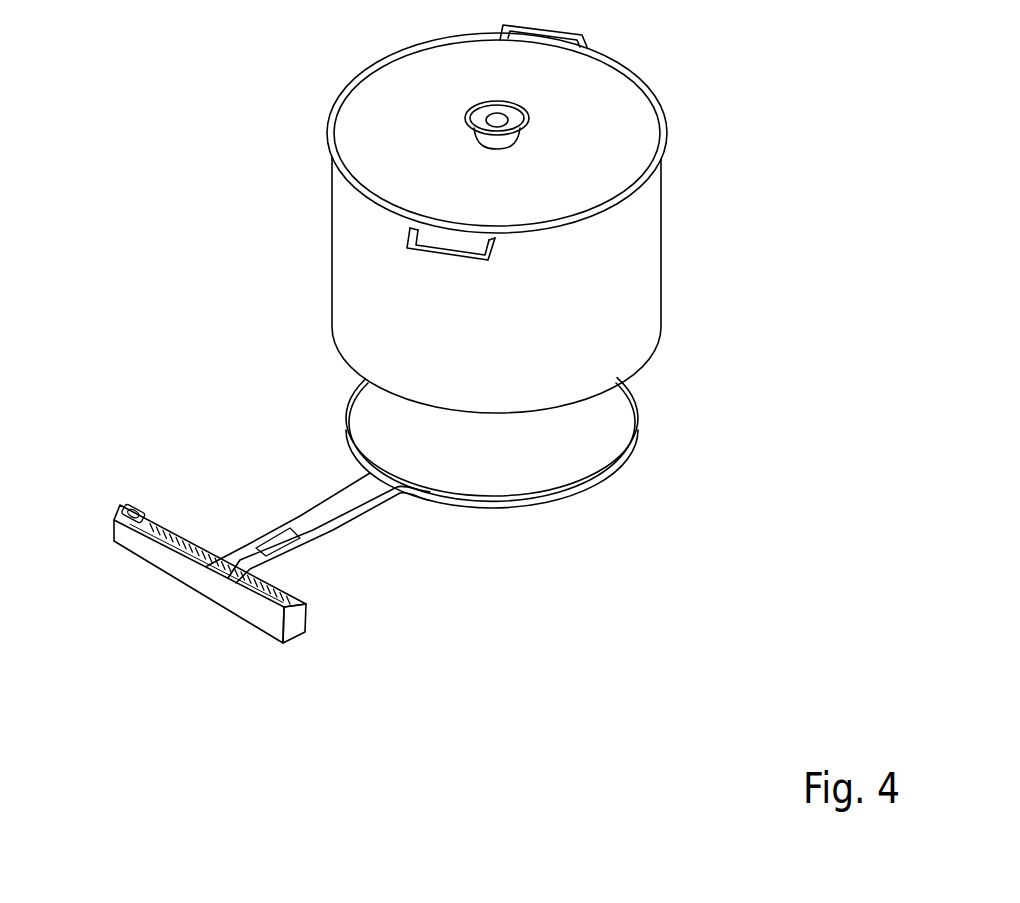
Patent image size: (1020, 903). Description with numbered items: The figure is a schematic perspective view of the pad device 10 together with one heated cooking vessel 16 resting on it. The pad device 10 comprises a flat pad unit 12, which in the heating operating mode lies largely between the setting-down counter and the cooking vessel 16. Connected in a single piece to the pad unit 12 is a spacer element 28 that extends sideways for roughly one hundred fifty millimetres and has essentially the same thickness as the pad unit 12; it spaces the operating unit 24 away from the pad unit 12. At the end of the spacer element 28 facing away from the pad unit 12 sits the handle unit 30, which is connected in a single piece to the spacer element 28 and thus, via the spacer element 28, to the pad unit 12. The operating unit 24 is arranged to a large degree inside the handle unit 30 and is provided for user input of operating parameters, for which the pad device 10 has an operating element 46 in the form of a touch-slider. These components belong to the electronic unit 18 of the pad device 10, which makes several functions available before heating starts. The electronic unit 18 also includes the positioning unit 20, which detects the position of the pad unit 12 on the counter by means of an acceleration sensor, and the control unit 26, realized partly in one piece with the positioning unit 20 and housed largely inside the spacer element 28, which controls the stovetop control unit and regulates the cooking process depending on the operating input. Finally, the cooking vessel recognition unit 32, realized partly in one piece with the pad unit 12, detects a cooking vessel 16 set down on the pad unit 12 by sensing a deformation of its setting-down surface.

The pad device 10 is at (676, 379).
The pad unit 12 is at (499, 494).
The cooking vessel 16 is at (617, 247).
The electronic unit 18 is at (247, 660).
The positioning unit 20 is at (206, 494).
The operating unit 24 is at (203, 593).
The control unit 26 is at (263, 532).
The spacer element 28 is at (340, 502).
The handle unit 30 is at (293, 620).
The cooking vessel recognition unit 32 is at (537, 445).
The operating element 46 is at (197, 558).